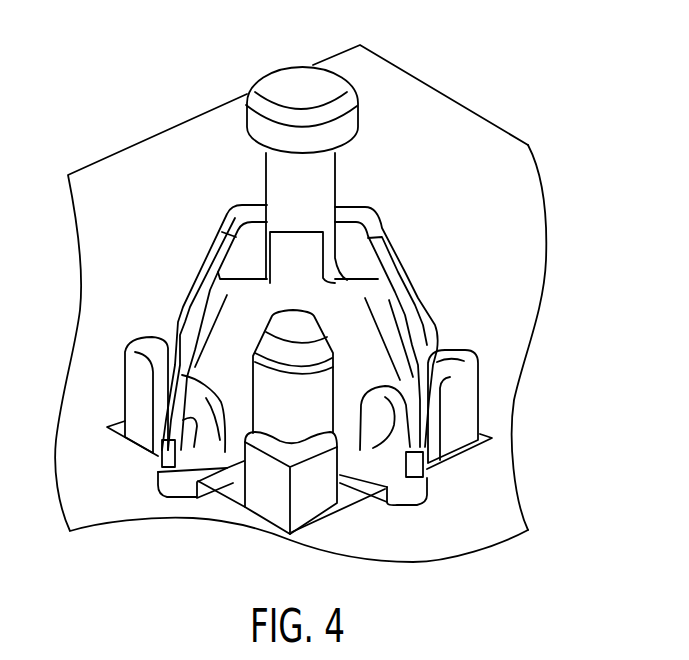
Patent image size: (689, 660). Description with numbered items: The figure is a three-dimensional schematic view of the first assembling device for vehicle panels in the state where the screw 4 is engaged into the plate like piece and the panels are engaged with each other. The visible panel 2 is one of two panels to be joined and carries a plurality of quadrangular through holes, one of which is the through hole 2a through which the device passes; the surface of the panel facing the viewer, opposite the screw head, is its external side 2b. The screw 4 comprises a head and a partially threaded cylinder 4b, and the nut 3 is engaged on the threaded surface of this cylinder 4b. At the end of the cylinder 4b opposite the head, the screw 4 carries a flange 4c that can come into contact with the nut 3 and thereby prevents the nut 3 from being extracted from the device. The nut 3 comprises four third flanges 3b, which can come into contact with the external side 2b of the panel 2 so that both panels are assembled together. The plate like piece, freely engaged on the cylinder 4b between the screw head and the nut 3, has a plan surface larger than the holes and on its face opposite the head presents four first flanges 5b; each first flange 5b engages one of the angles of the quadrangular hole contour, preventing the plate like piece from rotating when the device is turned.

The panel 2 is at (166, 126).
The through hole 2a is at (115, 432).
The external side 2b is at (515, 242).
The nut 3 is at (184, 296).
The third flange 3b is at (188, 470).
The screw 4 is at (260, 169).
The partially threaded cylinder 4b is at (320, 188).
The flange 4c is at (287, 85).
The first flange 5b is at (465, 405).